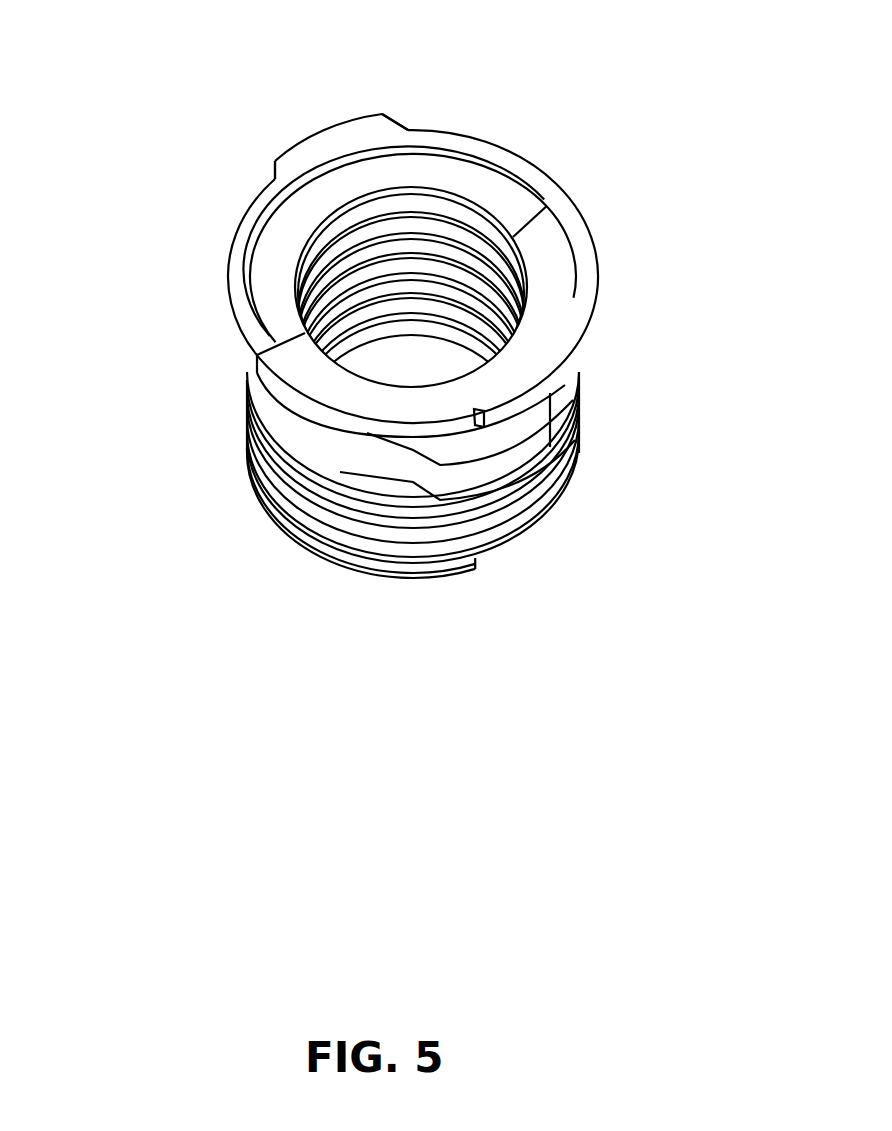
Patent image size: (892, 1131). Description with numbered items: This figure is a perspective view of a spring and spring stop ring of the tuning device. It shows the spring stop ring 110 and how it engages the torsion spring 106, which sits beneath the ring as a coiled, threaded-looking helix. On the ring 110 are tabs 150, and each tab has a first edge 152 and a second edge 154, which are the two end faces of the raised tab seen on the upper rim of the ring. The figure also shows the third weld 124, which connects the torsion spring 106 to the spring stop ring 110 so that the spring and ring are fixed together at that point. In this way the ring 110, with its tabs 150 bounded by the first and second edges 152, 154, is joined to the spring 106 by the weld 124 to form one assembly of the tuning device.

The spring stop ring 110 is at (229, 266).
The torsion spring 106 is at (250, 443).
The tabs 150 is at (331, 127).
The first edge 152 is at (274, 162).
The second edge 154 is at (401, 121).
The third weld 124 is at (367, 433).